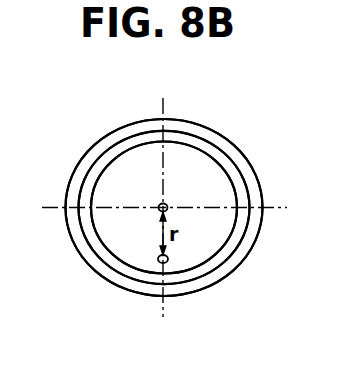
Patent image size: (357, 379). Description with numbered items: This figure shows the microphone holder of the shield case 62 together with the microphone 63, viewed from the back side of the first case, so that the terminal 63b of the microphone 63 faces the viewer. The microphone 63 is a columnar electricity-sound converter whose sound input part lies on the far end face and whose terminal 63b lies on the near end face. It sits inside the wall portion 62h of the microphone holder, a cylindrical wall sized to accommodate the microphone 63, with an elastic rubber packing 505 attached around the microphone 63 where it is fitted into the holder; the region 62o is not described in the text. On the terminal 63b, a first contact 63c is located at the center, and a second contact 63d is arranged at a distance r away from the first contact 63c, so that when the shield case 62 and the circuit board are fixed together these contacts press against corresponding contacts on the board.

The shield case 62 is at (208, 115).
The wall portion 62h is at (121, 133).
The outer peripheral portion 62o is at (225, 150).
The microphone 63 is at (208, 183).
The terminal 63b is at (212, 193).
The first contact 63c is at (159, 209).
The second contact 63d is at (154, 264).
The packing 505 is at (228, 245).